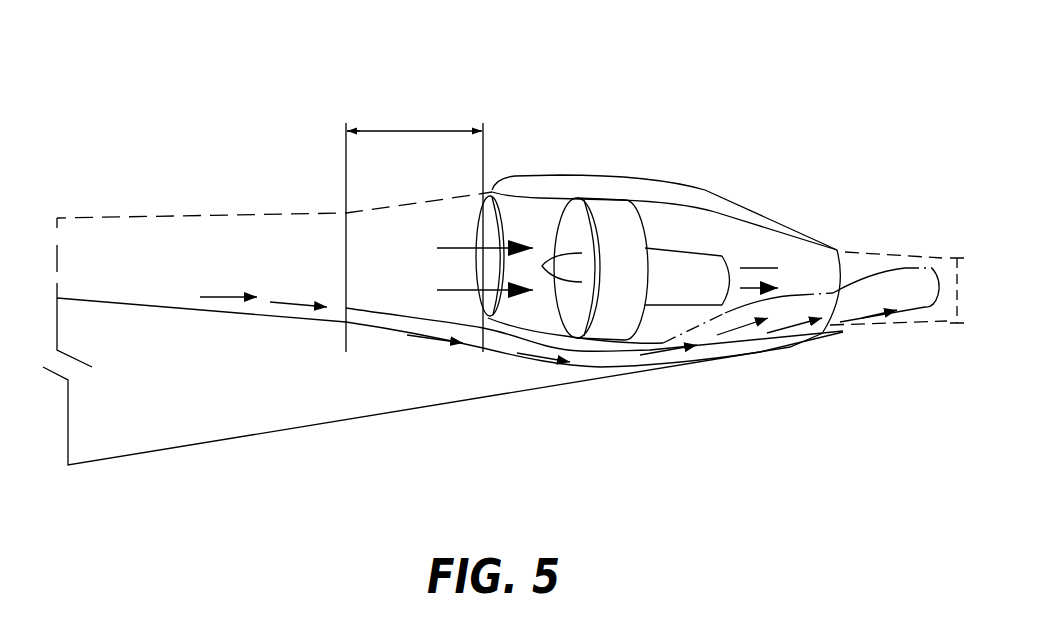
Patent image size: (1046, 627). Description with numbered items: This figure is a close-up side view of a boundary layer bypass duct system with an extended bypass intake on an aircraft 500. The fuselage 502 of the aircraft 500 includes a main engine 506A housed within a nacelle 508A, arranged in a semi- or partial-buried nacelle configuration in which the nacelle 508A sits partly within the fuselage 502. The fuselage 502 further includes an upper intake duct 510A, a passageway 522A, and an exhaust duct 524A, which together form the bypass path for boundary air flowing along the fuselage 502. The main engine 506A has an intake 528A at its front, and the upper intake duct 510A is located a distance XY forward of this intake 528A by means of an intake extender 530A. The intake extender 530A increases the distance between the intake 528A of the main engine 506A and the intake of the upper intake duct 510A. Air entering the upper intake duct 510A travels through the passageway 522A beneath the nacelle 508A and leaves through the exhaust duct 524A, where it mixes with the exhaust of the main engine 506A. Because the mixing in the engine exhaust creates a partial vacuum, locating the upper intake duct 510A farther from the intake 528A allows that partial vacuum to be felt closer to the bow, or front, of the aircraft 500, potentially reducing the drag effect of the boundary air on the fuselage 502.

The aircraft 500 is at (227, 74).
The fuselage 502 is at (275, 363).
The main engine 506A is at (613, 218).
The nacelle 508A is at (657, 193).
The upper intake duct 510A is at (492, 362).
The passageway 522A is at (598, 362).
The exhaust duct 524A is at (693, 350).
The intake 528A is at (475, 273).
The intake extender 530A is at (388, 316).